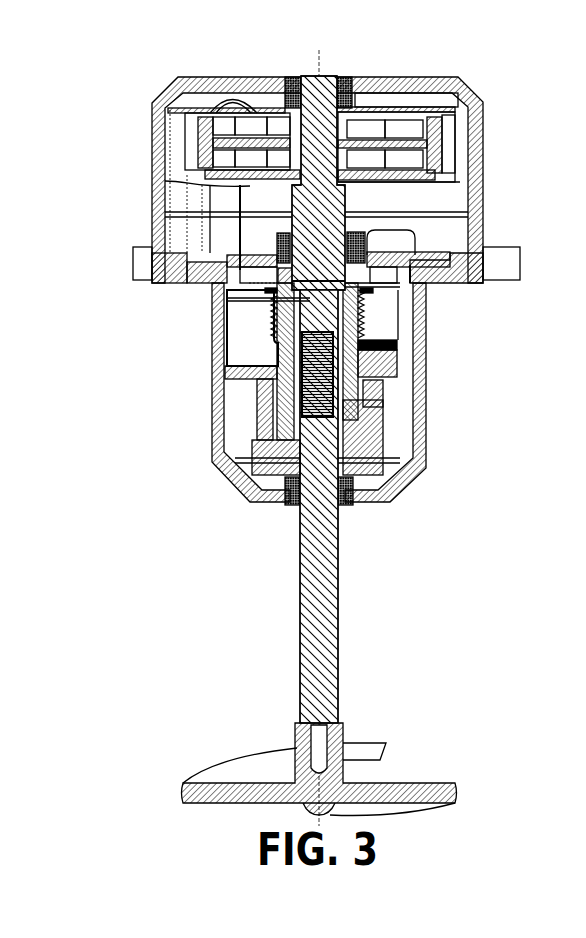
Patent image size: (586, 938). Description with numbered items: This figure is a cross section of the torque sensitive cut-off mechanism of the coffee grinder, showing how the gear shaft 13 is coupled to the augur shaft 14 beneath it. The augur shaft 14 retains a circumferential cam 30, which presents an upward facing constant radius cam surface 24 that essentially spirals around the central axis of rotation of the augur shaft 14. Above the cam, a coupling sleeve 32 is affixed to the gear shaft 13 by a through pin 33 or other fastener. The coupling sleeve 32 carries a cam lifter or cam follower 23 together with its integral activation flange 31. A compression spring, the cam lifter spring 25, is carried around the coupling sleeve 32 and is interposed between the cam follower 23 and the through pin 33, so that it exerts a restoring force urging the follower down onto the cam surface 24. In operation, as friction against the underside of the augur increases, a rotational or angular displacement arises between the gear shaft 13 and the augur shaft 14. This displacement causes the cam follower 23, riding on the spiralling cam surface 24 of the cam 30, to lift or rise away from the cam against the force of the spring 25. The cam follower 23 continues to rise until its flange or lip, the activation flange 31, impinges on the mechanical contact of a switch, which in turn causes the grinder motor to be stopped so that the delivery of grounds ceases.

The gear shaft 13 is at (315, 95).
The augur shaft 14 is at (331, 626).
The cam follower 23 is at (285, 344).
The cam surface 24 is at (280, 443).
The cam lifter spring 25 is at (362, 312).
The circumferential cam 30 is at (380, 443).
The activation flange 31 is at (298, 368).
The coupling sleeve 32 is at (312, 303).
The through pin 33 is at (328, 283).